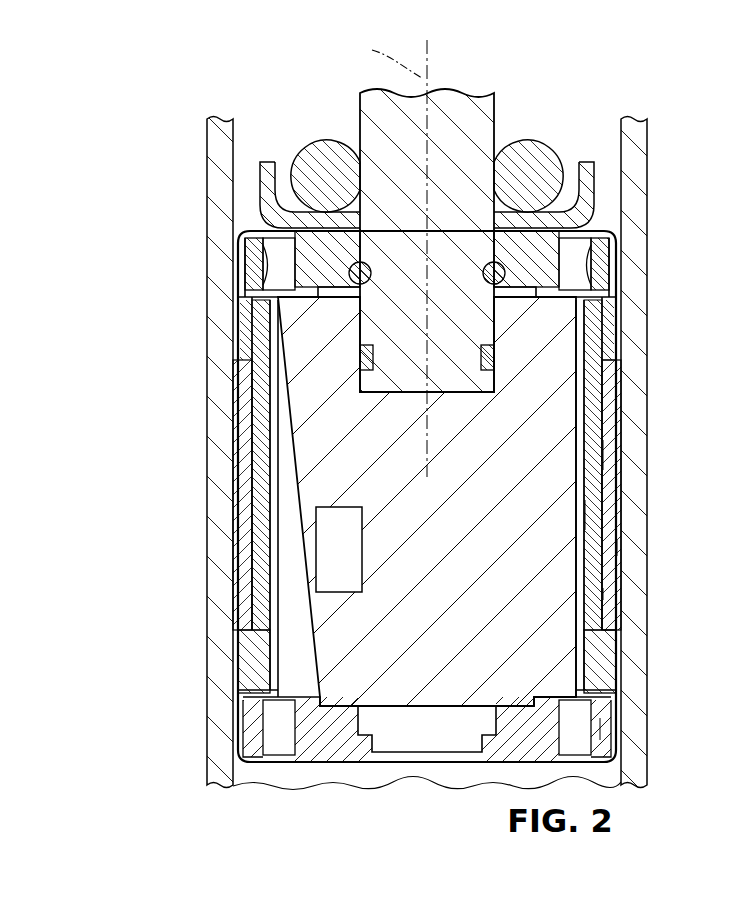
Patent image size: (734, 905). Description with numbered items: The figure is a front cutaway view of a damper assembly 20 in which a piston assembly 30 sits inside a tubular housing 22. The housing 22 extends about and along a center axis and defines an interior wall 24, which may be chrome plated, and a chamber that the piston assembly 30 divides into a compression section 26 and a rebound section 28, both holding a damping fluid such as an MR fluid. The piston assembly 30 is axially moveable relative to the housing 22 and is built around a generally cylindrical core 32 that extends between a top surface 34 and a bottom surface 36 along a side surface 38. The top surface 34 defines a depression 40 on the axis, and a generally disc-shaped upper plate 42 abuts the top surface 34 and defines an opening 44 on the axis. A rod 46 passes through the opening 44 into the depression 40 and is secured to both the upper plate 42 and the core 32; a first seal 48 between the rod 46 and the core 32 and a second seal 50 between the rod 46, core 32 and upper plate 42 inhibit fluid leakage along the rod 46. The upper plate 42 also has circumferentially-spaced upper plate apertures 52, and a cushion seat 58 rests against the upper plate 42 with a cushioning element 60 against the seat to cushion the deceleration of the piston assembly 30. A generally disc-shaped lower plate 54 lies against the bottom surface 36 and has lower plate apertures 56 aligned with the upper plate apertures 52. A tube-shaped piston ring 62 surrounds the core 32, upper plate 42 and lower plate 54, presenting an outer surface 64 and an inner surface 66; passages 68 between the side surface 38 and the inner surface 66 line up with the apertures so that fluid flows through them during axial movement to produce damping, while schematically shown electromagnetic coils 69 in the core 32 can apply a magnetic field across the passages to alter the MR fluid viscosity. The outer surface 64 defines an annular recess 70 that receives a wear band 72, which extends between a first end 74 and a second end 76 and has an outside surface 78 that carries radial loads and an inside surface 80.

The damper assembly 20 is at (426, 435).
The tubular housing 22 is at (456, 422).
The interior wall 24 is at (622, 140).
The compression section 26 is at (630, 778).
The rebound section 28 is at (248, 127).
The piston assembly 30 is at (426, 507).
The core 32 is at (489, 501).
The top surface 34 is at (282, 293).
The bottom surface 36 is at (474, 765).
The side surface 38 is at (584, 475).
The depression 40 is at (366, 393).
The upper plate 42 is at (342, 238).
The opening 44 is at (482, 267).
The rod 46 is at (426, 242).
The first seal 48 is at (497, 366).
The second seal 50 is at (500, 283).
The upper plate apertures 52 is at (265, 255).
The lower plate 54 is at (602, 725).
The lower plate apertures 56 is at (272, 730).
The cushion seat 58 is at (263, 185).
The cushioning element 60 is at (322, 150).
The piston ring 62 is at (240, 665).
The outer surface 64 is at (240, 650).
The inner surface 66 is at (592, 415).
The passages 68 is at (592, 515).
The electromagnetic coils 69 is at (329, 559).
The recess 70 is at (248, 522).
The wear band 72 is at (615, 456).
The first end 74 is at (614, 346).
The second end 76 is at (606, 636).
The outside surface 78 is at (622, 547).
The inside surface 80 is at (601, 594).